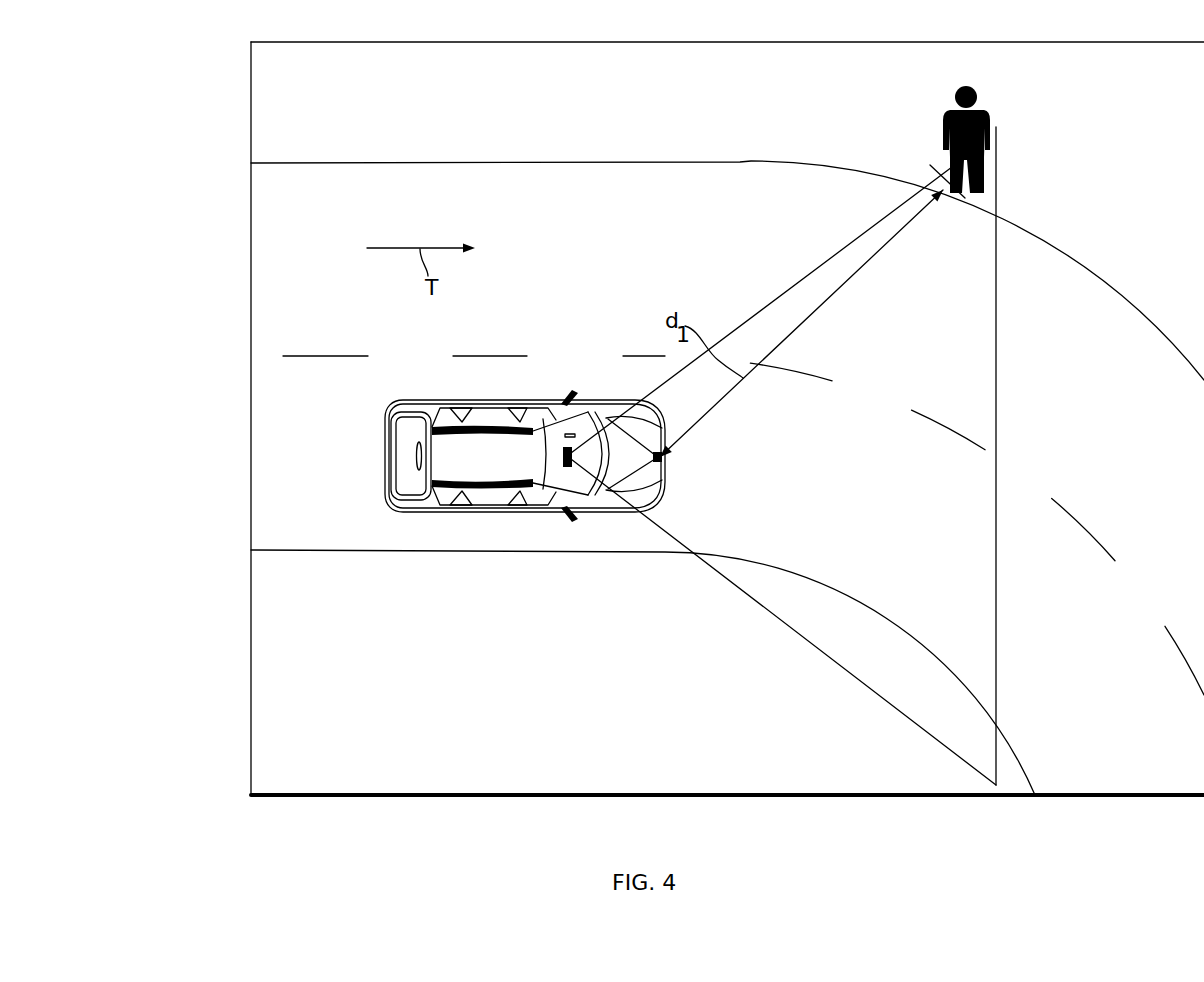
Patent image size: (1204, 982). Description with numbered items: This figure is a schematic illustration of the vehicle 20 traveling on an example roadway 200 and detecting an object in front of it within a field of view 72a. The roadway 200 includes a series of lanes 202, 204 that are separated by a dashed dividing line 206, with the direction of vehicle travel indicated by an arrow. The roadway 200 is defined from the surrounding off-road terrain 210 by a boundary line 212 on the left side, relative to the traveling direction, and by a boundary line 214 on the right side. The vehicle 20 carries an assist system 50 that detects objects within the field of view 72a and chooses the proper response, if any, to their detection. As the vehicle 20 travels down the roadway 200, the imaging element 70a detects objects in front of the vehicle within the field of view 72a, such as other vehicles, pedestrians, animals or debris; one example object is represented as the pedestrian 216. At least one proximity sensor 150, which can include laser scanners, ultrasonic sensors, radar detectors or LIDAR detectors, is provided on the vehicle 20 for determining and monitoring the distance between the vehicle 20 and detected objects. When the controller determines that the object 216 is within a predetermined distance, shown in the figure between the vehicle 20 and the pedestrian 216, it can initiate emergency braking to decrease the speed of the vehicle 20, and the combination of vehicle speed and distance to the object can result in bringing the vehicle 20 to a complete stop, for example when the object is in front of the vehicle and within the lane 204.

The roadway 200 is at (298, 109).
The off-road terrain 210 is at (648, 126).
The boundary line 212 is at (517, 163).
The boundary line 214 is at (322, 552).
The lane 202 is at (641, 292).
The lane 204 is at (1109, 704).
The dashed dividing line 206 is at (316, 358).
The field of view 72a is at (837, 342).
The pedestrian 216 is at (984, 177).
The vehicle 20 is at (451, 534).
The assist system 50 is at (548, 458).
The imaging element 70a is at (567, 424).
The proximity sensor 150 is at (652, 497).